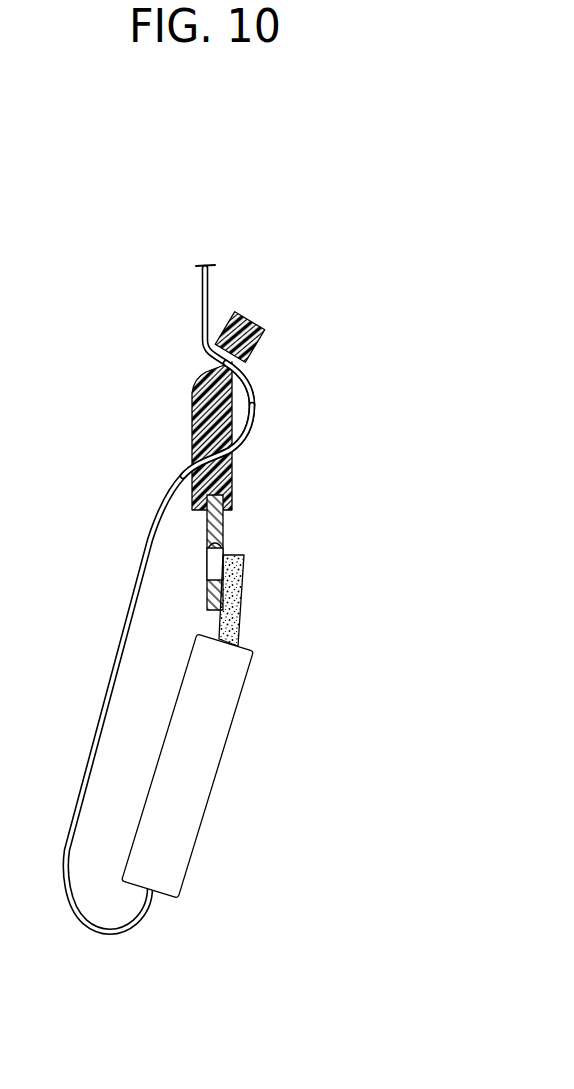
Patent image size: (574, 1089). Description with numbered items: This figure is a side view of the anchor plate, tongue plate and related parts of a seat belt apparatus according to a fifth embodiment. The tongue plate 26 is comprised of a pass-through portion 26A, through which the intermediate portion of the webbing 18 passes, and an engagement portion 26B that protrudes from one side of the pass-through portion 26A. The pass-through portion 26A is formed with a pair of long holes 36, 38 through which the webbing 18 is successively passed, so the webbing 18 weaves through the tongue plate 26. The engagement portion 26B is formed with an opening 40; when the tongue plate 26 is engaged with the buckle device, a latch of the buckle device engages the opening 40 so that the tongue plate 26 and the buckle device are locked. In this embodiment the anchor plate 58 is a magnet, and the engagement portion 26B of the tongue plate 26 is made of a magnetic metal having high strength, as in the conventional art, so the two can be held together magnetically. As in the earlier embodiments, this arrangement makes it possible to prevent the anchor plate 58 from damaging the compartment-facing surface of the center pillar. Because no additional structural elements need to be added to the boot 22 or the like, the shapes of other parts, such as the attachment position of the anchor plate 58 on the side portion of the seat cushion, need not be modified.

The webbing 18 is at (201, 300).
The boot 22 is at (210, 755).
The tongue plate 26 is at (255, 314).
The pass-through portion 26A is at (198, 423).
The engagement portion 26B is at (227, 518).
The long hole 36 is at (234, 375).
The long hole 38 is at (233, 457).
The opening 40 is at (197, 555).
The anchor plate 58 is at (240, 600).